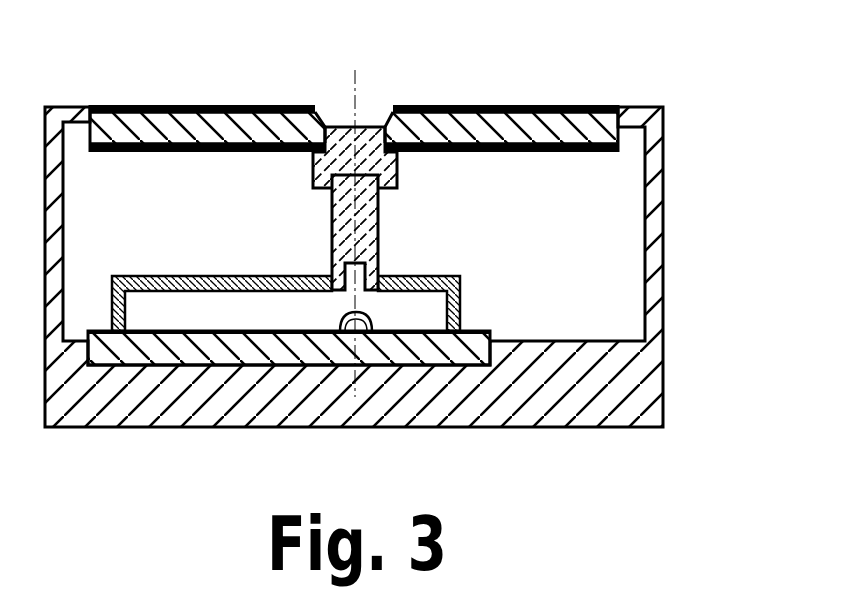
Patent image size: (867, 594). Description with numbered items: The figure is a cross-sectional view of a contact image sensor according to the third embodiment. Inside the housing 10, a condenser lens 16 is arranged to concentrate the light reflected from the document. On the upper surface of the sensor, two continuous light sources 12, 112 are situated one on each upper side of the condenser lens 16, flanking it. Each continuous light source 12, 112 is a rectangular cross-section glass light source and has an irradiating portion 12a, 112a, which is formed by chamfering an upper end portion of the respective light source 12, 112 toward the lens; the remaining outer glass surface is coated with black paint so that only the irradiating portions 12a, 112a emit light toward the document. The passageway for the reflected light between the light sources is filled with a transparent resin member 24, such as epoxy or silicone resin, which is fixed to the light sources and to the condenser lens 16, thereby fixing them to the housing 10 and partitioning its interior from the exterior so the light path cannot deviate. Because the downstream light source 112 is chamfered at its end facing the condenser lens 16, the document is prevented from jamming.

The housing 10 is at (663, 247).
The continuous light source 12 is at (172, 103).
The irradiating portion 12a is at (322, 105).
The continuous light source 112 is at (560, 105).
The irradiating portion 112a is at (390, 105).
The transparent resin member 24 is at (397, 175).
The condenser lens 16 is at (378, 243).